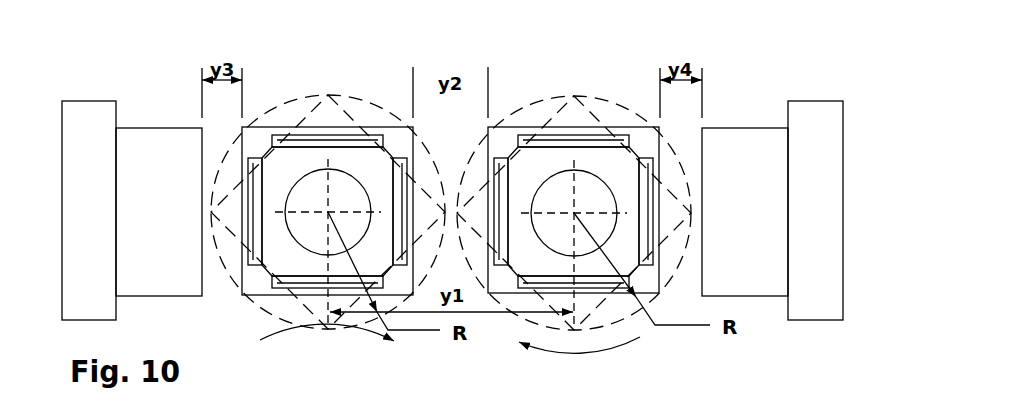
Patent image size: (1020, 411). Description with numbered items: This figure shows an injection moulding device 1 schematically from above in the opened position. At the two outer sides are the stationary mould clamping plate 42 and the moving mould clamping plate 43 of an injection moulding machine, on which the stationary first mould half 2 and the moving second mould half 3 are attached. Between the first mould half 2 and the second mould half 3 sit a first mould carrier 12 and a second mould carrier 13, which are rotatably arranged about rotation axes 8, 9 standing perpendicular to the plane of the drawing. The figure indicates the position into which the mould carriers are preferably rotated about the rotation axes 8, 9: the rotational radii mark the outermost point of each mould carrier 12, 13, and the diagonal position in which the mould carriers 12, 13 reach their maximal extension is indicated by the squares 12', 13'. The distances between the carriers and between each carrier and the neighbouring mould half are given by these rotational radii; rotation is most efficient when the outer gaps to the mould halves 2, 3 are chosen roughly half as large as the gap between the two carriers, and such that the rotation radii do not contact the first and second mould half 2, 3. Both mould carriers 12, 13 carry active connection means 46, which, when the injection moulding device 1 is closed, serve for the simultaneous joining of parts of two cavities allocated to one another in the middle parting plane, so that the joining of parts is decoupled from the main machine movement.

The injection moulding device 1 is at (805, 48).
The first mould half 2 is at (160, 127).
The second mould half 3 is at (737, 124).
The rotation axis 8 is at (328, 214).
The rotation axis 9 is at (574, 215).
The first mould carrier 12 is at (336, 170).
The square indicating diagonal position of first mould carrier 12' is at (328, 171).
The second mould carrier 13 is at (558, 170).
The square indicating diagonal position of second mould carrier 13' is at (574, 171).
The stationary mould clamping plate 42 is at (95, 100).
The moving mould clamping plate 43 is at (808, 99).
The active connection means 46 is at (592, 282).